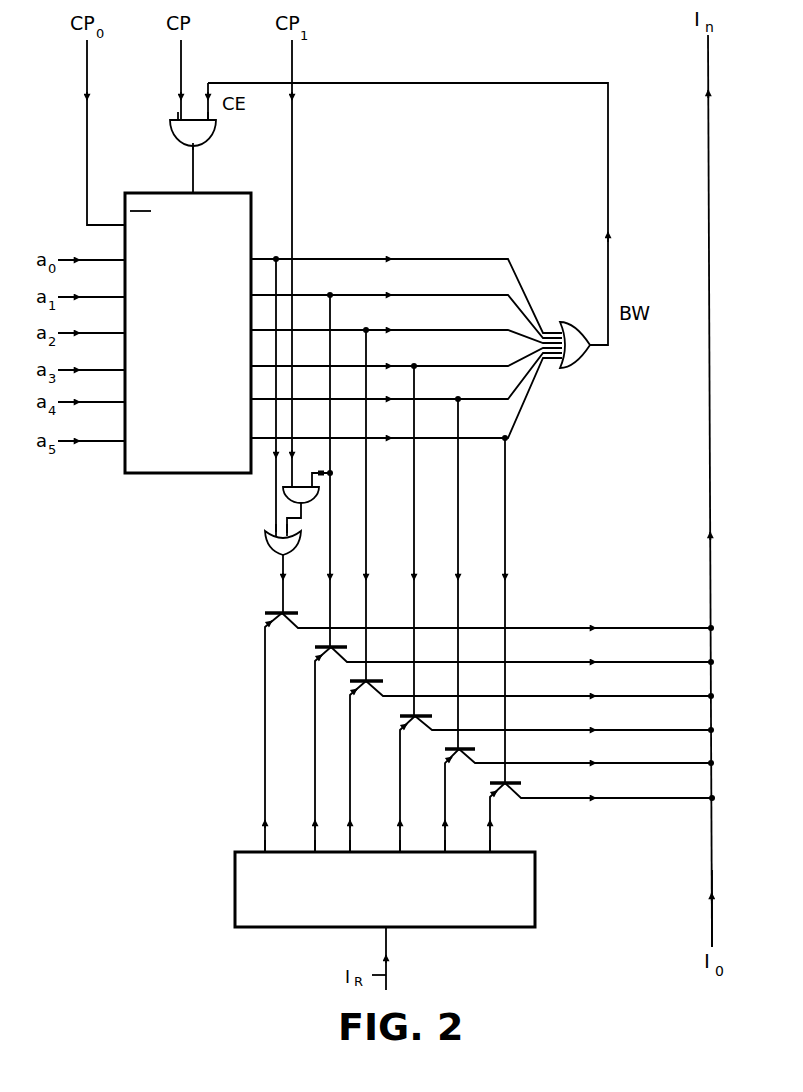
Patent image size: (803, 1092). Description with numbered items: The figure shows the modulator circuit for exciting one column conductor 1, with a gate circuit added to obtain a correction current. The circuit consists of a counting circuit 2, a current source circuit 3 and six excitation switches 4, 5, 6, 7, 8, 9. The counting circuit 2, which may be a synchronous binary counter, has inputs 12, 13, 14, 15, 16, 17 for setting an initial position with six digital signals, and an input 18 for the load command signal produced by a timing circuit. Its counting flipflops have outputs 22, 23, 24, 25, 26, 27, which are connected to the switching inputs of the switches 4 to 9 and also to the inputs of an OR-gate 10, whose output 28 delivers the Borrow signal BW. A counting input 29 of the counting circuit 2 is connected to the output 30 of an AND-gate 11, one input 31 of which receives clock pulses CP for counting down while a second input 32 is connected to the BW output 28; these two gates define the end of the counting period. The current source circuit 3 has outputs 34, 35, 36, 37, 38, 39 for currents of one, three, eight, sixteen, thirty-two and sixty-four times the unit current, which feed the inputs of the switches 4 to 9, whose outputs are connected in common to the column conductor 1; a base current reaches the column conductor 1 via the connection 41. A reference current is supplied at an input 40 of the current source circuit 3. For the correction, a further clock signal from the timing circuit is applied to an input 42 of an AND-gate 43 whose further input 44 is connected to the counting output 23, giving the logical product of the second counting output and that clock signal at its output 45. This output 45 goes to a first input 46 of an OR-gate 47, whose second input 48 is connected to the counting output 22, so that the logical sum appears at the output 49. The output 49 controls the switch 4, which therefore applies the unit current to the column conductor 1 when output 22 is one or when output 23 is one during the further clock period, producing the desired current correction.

The column conductor 1 is at (709, 110).
The counting circuit 2 is at (252, 206).
The current source circuit 3 is at (538, 888).
The excitation switch 4 is at (296, 611).
The excitation switch 5 is at (343, 645).
The excitation switch 6 is at (390, 680).
The excitation switch 7 is at (429, 714).
The excitation switch 8 is at (478, 747).
The excitation switch 9 is at (525, 783).
The OR-gate 10 is at (580, 372).
The AND-gate 11 is at (210, 140).
The input 12 is at (123, 264).
The input 13 is at (123, 301).
The input 14 is at (123, 337).
The input 15 is at (123, 374).
The input 16 is at (123, 406).
The input 17 is at (123, 445).
The input 18 is at (124, 224).
The counting output 22 is at (253, 256).
The counting output 23 is at (253, 293).
The counting output 24 is at (253, 328).
The counting output 25 is at (253, 364).
The counting output 26 is at (253, 398).
The counting output 27 is at (253, 436).
The output of the OR-gate 28 is at (587, 349).
The counting input 29 is at (195, 190).
The output of the AND-gate 30 is at (185, 143).
The input of the AND-gate 31 is at (178, 120).
The second input of the AND-gate 32 is at (214, 121).
The current source output 34 is at (267, 851).
The current source output 35 is at (316, 851).
The current source output 36 is at (352, 851).
The current source output 37 is at (402, 851).
The current source output 38 is at (447, 851).
The current source output 39 is at (492, 851).
The input for reference current 40 is at (387, 930).
The connection 41 is at (711, 866).
The input of the AND-gate 42 is at (300, 487).
The AND-gate 43 is at (303, 504).
The further input of the AND-gate 44 is at (320, 477).
The output of the AND-gate 45 is at (289, 513).
The first input of the OR-gate 46 is at (296, 538).
The OR-gate 47 is at (268, 548).
The second input of the OR-gate 48 is at (270, 533).
The output of the OR-gate 49 is at (286, 560).